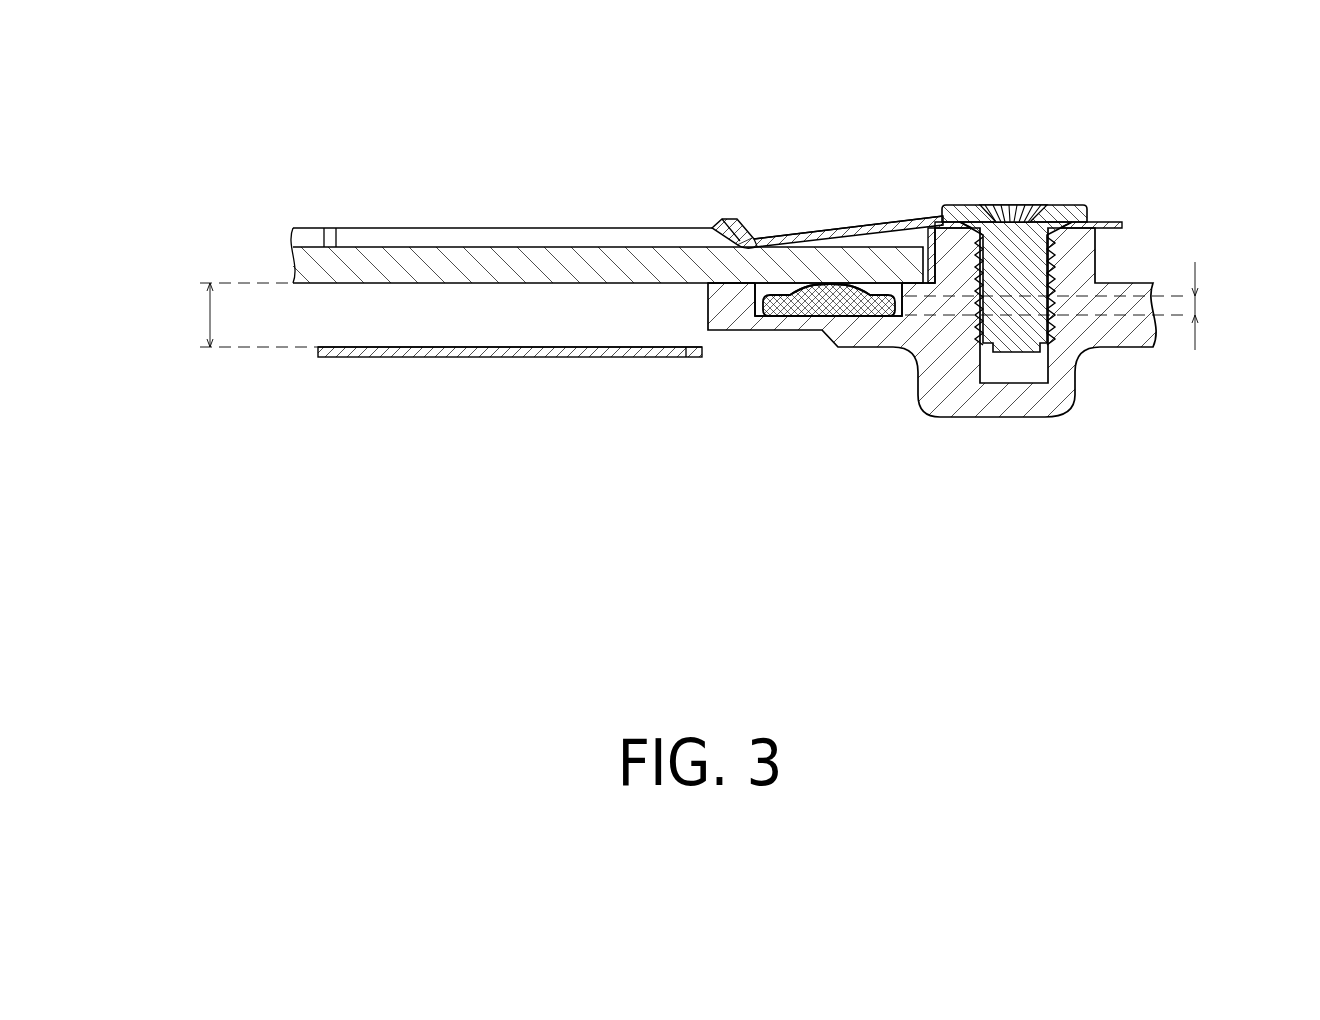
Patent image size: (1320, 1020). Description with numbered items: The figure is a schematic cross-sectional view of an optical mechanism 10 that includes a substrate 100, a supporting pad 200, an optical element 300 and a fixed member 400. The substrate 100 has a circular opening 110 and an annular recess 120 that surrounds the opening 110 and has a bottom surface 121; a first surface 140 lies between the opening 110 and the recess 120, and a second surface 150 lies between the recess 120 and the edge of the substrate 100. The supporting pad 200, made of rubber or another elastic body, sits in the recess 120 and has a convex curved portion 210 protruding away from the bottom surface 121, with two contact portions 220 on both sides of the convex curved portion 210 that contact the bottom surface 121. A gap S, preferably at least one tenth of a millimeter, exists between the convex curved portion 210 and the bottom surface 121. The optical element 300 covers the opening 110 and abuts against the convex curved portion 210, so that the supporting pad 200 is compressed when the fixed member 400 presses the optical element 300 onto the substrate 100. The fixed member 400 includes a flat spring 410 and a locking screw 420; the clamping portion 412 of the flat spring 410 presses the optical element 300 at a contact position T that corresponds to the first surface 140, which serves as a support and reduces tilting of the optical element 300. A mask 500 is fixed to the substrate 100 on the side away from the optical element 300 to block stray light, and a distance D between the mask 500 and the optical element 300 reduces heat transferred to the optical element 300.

The optical mechanism 10 is at (216, 110).
The substrate 100 is at (1013, 400).
The opening 110 is at (585, 322).
The recess 120 is at (771, 277).
The bottom surface 121 is at (839, 325).
The first surface 140 is at (725, 275).
The second surface 150 is at (921, 294).
The supporting pad 200 is at (880, 312).
The convex curved portion 210 is at (833, 277).
The contact portion 220 is at (778, 321).
The optical element 300 is at (374, 265).
The fixed member 400 is at (995, 180).
The flat spring 410 is at (806, 240).
The clamping portion 412 is at (848, 227).
The locking screw 420 is at (1058, 218).
The mask 500 is at (440, 347).
The distance D is at (249, 315).
The gap S is at (1062, 306).
The contact position T is at (738, 262).